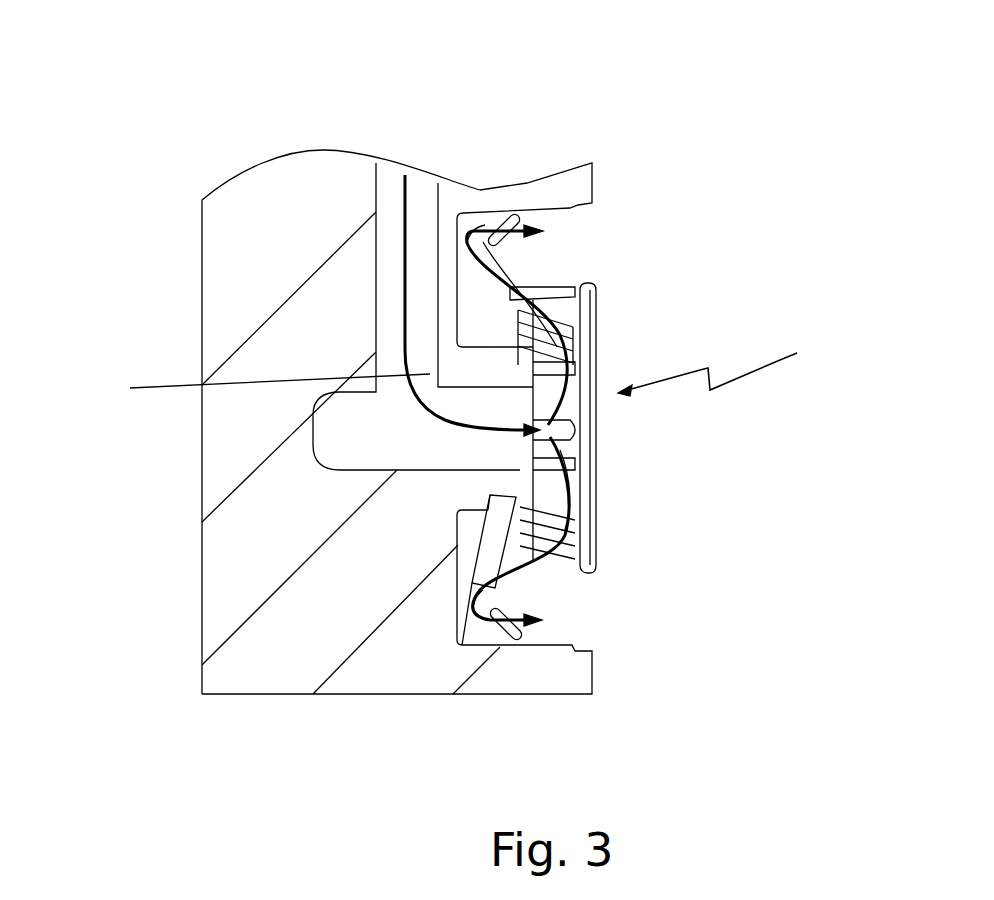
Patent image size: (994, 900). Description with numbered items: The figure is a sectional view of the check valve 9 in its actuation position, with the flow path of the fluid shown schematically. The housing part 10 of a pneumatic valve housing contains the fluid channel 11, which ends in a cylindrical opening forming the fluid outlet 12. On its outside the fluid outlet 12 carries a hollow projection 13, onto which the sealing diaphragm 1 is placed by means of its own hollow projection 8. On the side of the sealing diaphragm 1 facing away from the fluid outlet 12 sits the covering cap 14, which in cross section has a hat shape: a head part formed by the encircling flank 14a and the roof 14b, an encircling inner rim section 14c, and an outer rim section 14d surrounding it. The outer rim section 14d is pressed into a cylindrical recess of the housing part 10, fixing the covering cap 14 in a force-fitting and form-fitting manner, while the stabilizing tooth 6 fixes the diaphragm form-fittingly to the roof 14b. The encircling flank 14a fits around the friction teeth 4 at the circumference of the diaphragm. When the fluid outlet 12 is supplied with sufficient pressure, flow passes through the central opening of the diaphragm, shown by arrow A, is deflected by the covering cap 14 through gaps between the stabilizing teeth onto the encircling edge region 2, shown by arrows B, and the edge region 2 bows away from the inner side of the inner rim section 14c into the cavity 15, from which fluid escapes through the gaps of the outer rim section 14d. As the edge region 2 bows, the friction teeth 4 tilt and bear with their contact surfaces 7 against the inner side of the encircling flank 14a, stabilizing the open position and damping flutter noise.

The sealing diaphragm 1 is at (263, 608).
The edge region 2 is at (272, 348).
The friction teeth 4 is at (663, 398).
The stabilizing tooth 6 is at (703, 428).
The contact surfaces 7 is at (597, 589).
The hollow projection 8 is at (487, 131).
The check valve 9 is at (715, 367).
The housing part 10 is at (388, 357).
The fluid channel 11 is at (423, 245).
The fluid outlet 12 is at (281, 315).
The hollow projection 13 is at (649, 333).
The covering cap 14 is at (668, 401).
The encircling flank 14a is at (648, 389).
The roof 14b is at (690, 507).
The inner rim section 14c is at (620, 437).
The outer rim section 14d is at (445, 435).
The cavity 15 is at (251, 398).
The arrow A is at (247, 364).
The arrows B is at (362, 402).